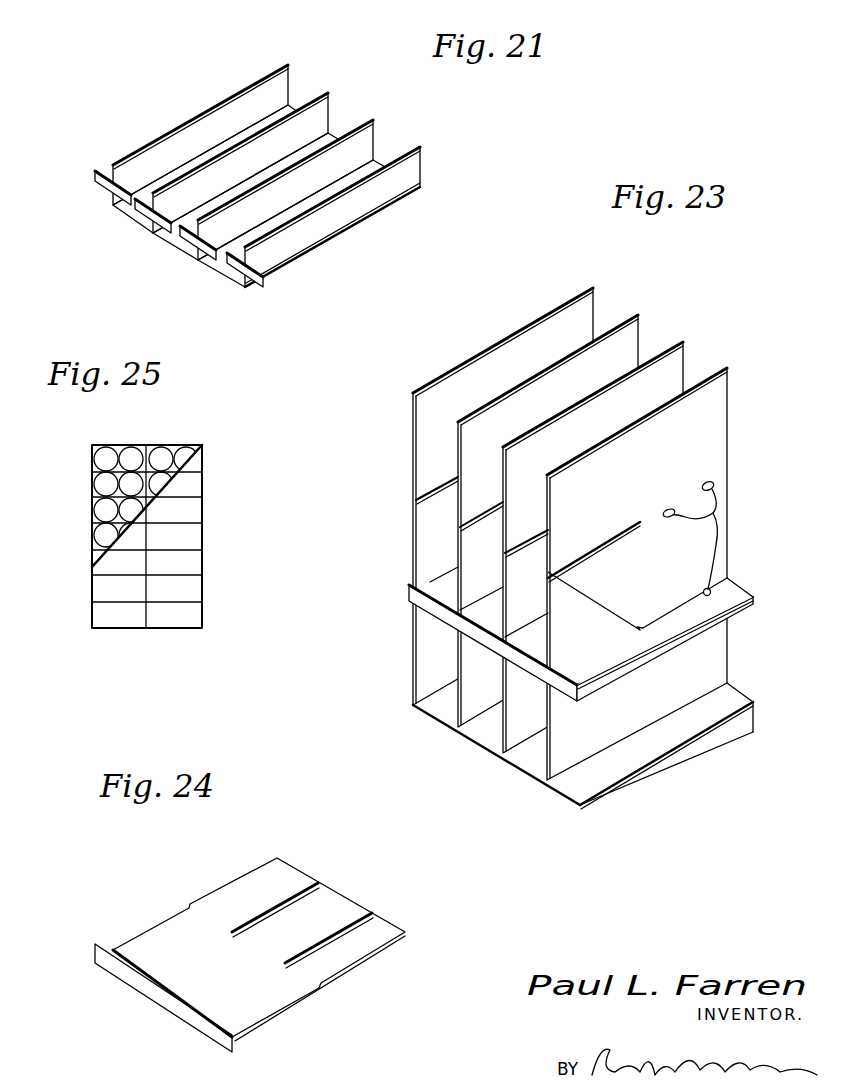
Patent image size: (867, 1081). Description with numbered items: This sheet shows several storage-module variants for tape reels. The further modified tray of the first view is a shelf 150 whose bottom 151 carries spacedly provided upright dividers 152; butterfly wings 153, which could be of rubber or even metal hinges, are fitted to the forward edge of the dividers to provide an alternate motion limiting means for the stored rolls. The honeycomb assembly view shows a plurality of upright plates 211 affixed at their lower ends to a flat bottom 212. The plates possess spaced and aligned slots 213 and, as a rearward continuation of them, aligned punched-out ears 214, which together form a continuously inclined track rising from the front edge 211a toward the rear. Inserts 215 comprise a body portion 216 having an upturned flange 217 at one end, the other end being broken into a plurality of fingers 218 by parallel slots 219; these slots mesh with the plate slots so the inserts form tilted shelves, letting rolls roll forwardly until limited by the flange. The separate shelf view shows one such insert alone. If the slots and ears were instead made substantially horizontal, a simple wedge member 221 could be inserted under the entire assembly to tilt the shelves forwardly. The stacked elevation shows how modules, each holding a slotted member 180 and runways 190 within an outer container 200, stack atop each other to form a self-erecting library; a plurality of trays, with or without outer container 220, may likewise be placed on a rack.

In FIG. 21, the shelf 150 is at (302, 172).
In FIG. 21, the bottom 151 is at (340, 132).
In FIG. 21, the upright dividers 152 is at (292, 86).
In FIG. 21, the butterfly wings 153 is at (170, 232).
In FIG. 23, the upright plates 211 is at (640, 336).
In FIG. 23, the front edge 211a is at (457, 443).
In FIG. 23, the flat bottom 212 is at (448, 696).
In FIG. 23, the slots 213 is at (585, 560).
In FIG. 23, the punched-out ears 214 is at (713, 513).
In FIG. 23, the inserts 215 is at (603, 672).
In FIG. 24, the inserts 215 is at (287, 943).
In FIG. 23, the body portion 216 is at (453, 600).
In FIG. 24, the body portion 216 is at (163, 937).
In FIG. 24, the upturned flange 217 is at (180, 1005).
In FIG. 23, the fingers 218 is at (740, 592).
In FIG. 24, the fingers 218 is at (325, 907).
In FIG. 24, the parallel slots 219 is at (367, 917).
In FIG. 23, the outer container 220 is at (700, 447).
In FIG. 23, the wedge member 221 is at (745, 722).
In FIG. 25, the slotted member 180 is at (92, 490).
In FIG. 25, the runways 190 is at (128, 457).
In FIG. 25, the outer container 200 is at (182, 590).